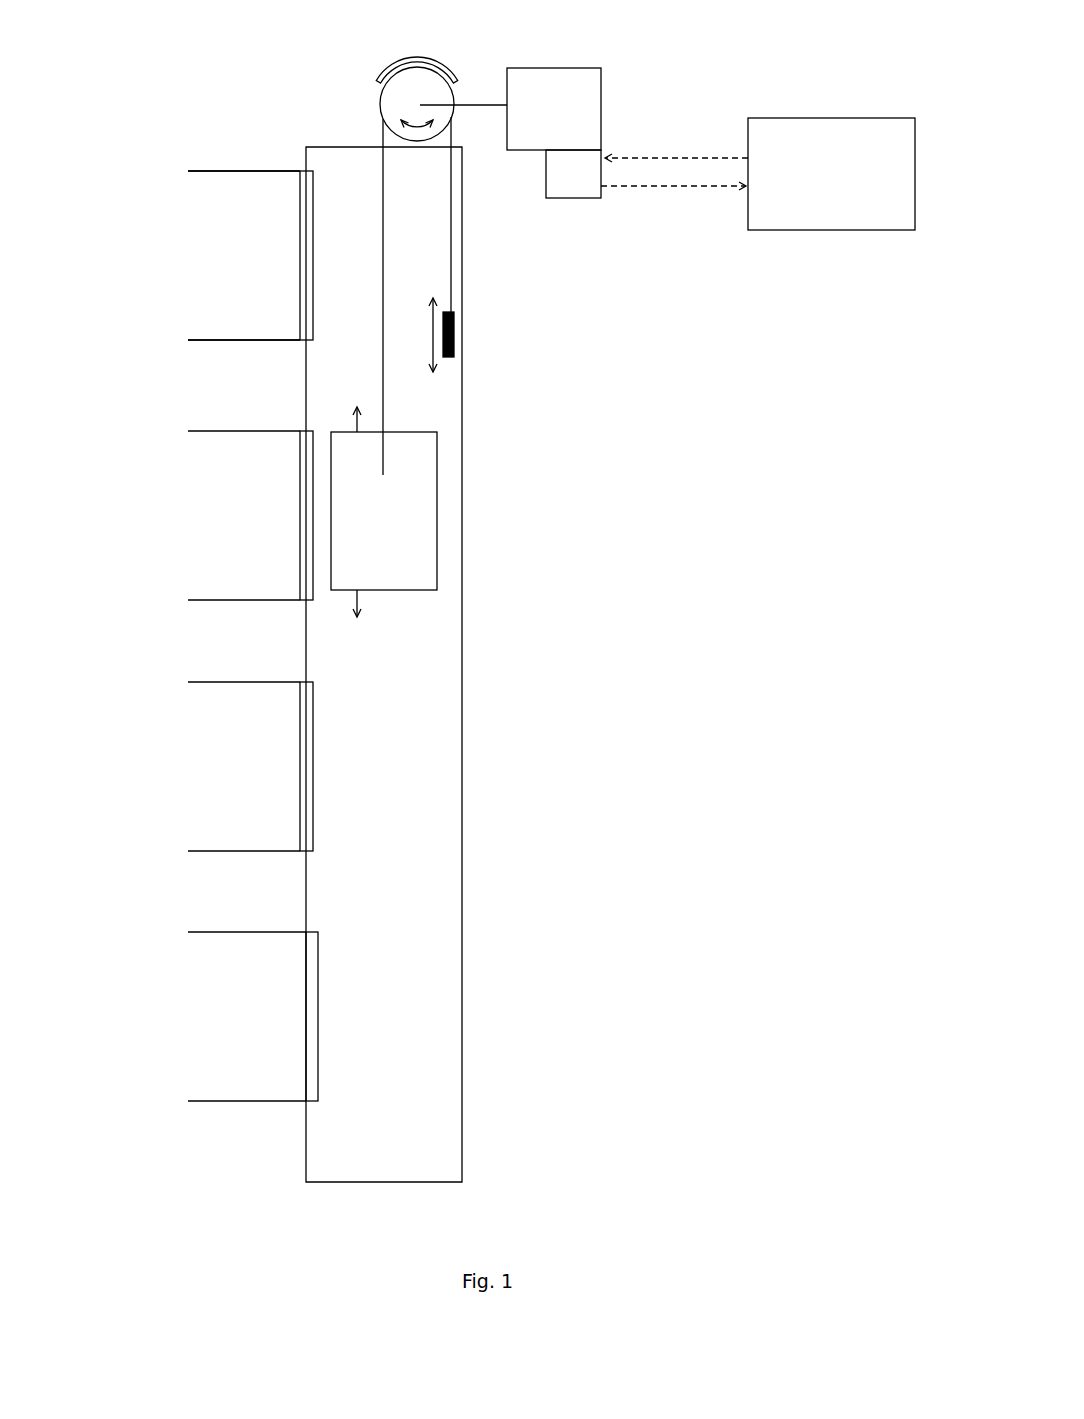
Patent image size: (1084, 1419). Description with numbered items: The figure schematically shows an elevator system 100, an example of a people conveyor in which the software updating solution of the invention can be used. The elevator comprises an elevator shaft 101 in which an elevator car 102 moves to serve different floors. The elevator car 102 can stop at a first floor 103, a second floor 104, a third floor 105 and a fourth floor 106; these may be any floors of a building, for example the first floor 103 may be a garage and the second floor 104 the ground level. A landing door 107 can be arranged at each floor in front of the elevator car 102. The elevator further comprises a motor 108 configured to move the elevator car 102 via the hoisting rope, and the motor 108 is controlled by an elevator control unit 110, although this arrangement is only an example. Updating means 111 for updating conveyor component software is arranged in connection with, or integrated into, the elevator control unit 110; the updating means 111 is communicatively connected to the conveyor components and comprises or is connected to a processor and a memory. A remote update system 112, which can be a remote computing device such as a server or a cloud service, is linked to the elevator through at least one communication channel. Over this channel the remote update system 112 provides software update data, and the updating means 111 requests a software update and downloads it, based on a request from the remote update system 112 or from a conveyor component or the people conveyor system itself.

The elevator system 100 is at (168, 77).
The elevator shaft 101 is at (440, 745).
The elevator car 102 is at (384, 512).
The first floor 103 is at (257, 1077).
The second floor 104 is at (240, 823).
The third floor 105 is at (227, 585).
The fourth floor 106 is at (232, 307).
The landing door 107 is at (307, 230).
The motor 108 is at (393, 104).
The elevator control unit 110 is at (554, 109).
The updating means 111 is at (562, 194).
The remote update system 112 is at (765, 130).